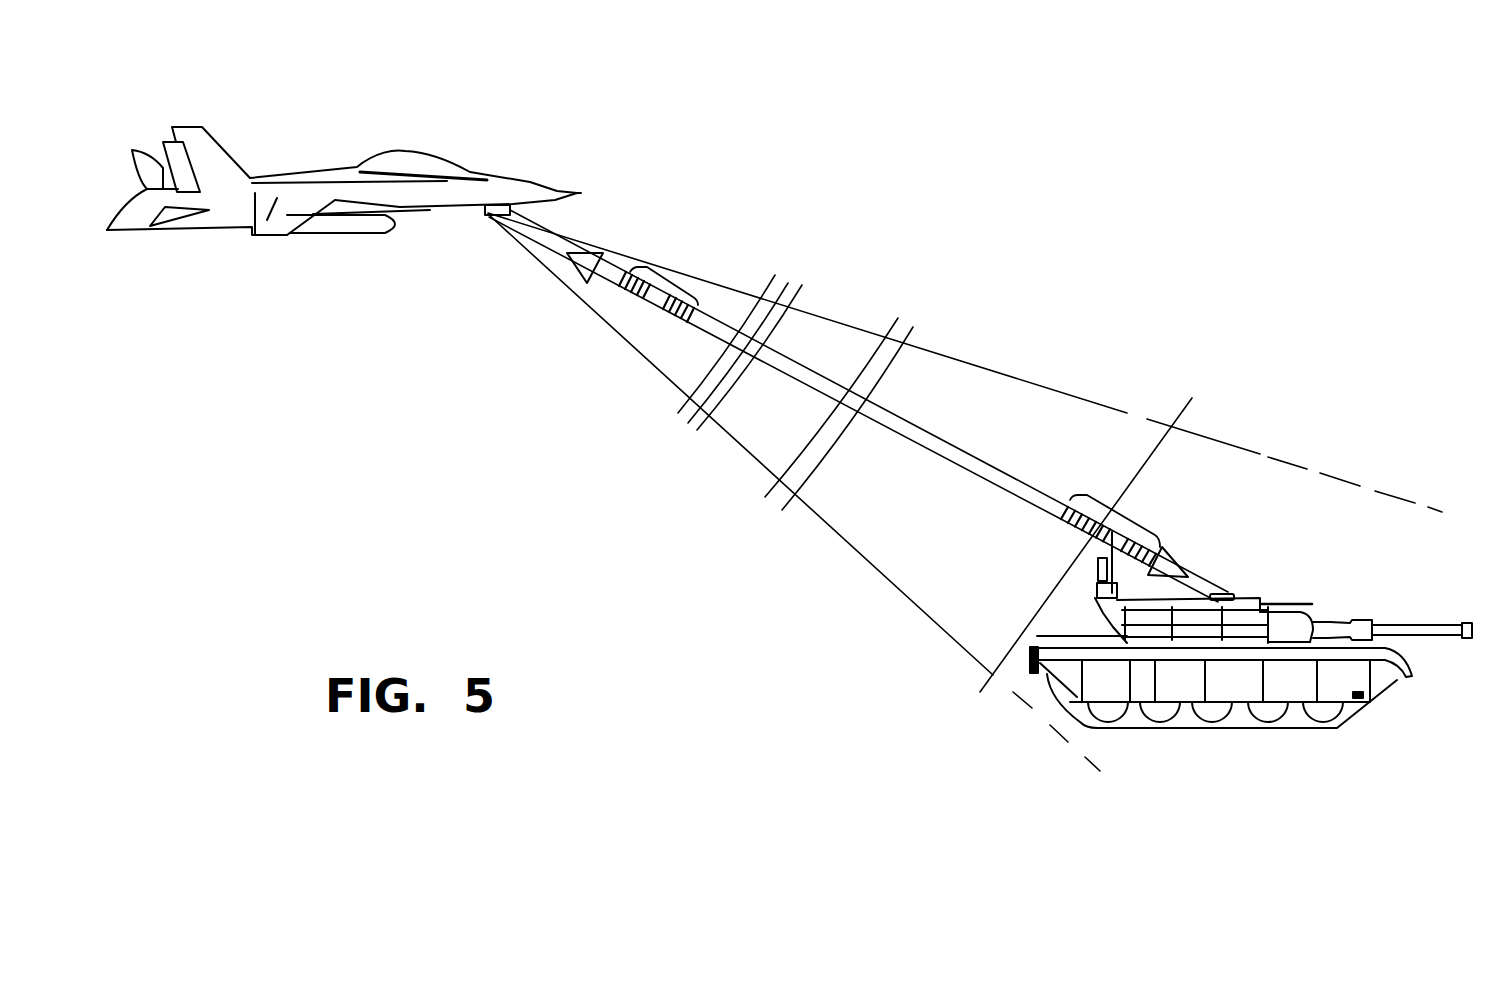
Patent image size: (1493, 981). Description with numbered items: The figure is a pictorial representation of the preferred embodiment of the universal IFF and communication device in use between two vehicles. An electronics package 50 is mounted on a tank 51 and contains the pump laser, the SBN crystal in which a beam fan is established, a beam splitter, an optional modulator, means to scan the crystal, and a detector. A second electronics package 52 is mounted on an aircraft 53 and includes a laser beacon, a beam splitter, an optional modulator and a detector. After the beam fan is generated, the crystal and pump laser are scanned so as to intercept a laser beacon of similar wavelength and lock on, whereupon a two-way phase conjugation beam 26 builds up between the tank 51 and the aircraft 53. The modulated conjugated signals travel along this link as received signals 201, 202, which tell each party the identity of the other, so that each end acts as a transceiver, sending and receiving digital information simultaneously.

The aircraft 53 is at (494, 176).
The electronics package 52 is at (488, 215).
The two-way phase conjugation beam 26 is at (1000, 488).
The received signal 201 is at (670, 274).
The received signal 202 is at (1122, 505).
The electronics package 50 is at (1233, 594).
The tank 51 is at (1237, 692).